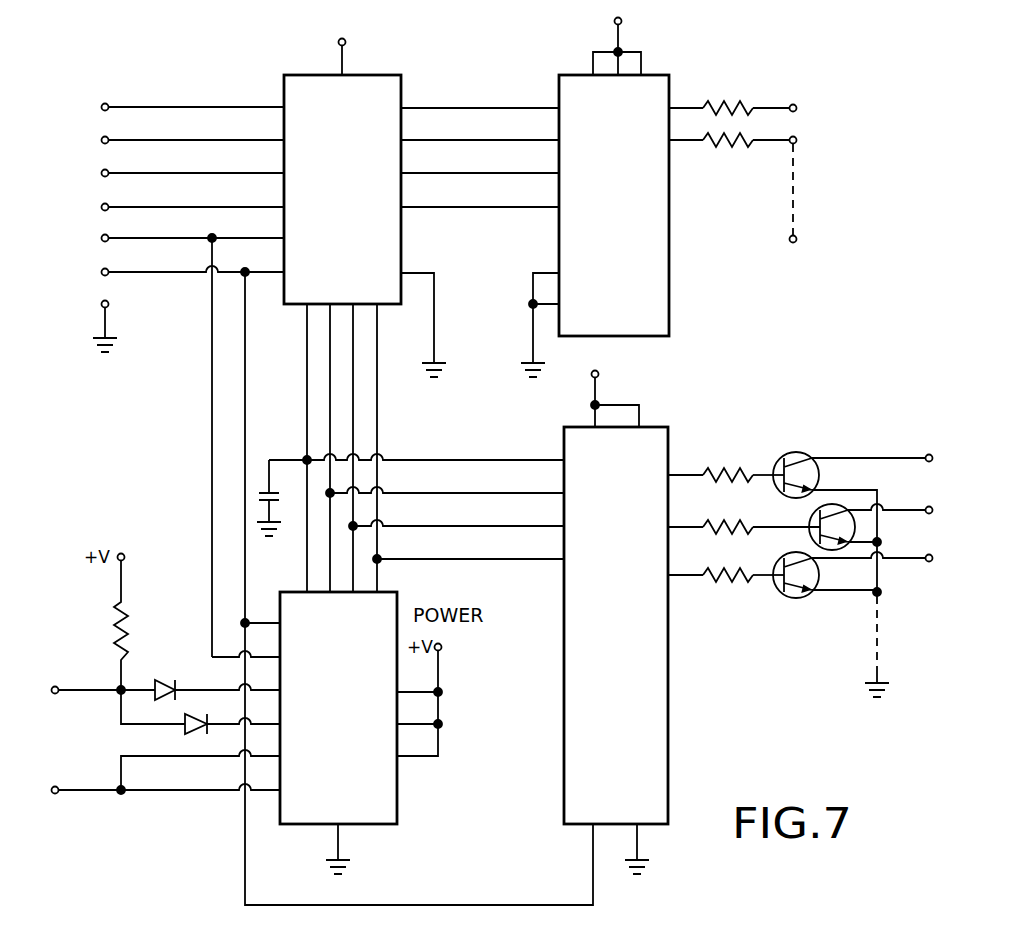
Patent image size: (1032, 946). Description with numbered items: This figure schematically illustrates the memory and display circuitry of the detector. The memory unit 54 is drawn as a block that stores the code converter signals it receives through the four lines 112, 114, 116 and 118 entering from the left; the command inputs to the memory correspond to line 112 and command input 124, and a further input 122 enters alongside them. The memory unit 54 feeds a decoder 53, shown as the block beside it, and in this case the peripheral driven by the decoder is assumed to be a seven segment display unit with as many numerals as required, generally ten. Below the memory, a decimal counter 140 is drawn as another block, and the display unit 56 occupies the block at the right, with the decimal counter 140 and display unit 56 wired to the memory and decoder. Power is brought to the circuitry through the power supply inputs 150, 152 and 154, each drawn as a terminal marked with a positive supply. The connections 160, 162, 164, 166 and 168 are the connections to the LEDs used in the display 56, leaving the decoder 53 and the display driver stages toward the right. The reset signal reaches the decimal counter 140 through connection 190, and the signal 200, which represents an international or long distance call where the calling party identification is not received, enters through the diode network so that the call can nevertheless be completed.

The memory unit 54 is at (310, 75).
The decoder 53 is at (583, 75).
The display unit 56 is at (668, 757).
The decimal counter 140 is at (397, 804).
The line 112 is at (101, 105).
The line 114 is at (101, 138).
The line 116 is at (101, 171).
The line 118 is at (101, 205).
The memory control input line 122 is at (101, 236).
The command input 124 is at (101, 270).
The power supply input 150 is at (622, 21).
The power supply input 152 is at (346, 41).
The power supply input 154 is at (599, 373).
The LED connection 160 is at (797, 105).
The LED connection 162 is at (797, 137).
The LED connection 164 is at (927, 452).
The LED connection 166 is at (927, 504).
The LED connection 168 is at (927, 552).
The reset signal connection 190 is at (56, 786).
The international or long distance call signal 200 is at (56, 686).